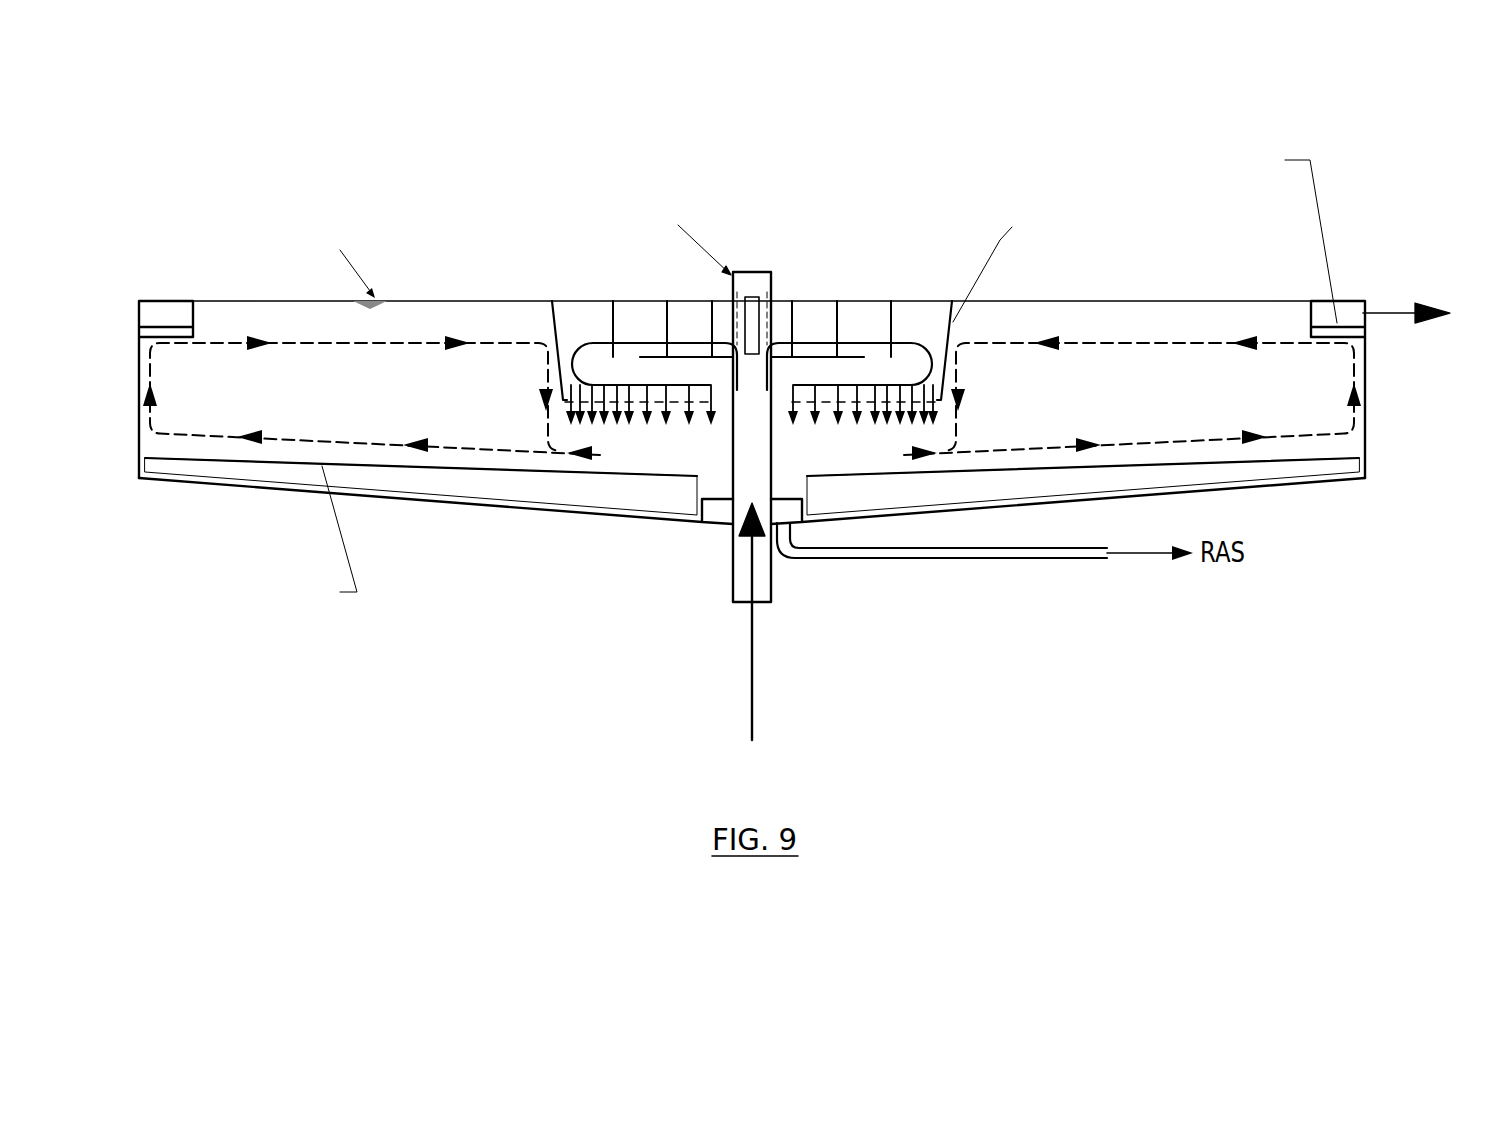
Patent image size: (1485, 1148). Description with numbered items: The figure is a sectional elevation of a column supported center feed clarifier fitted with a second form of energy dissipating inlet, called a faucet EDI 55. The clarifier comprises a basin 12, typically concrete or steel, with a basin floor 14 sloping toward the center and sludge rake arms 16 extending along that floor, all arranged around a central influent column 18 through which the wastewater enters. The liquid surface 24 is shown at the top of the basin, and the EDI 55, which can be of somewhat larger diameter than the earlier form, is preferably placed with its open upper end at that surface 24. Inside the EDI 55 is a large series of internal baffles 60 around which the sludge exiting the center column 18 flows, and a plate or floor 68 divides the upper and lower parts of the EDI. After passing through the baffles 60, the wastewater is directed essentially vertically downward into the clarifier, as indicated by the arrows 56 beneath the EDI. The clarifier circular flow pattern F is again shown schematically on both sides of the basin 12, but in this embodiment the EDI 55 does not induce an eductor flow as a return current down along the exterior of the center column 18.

The basin 12 is at (1365, 444).
The basin floor 14 is at (1265, 467).
The sludge rake arms 16 is at (380, 466).
The central influent column 18 is at (771, 468).
The liquid surface 24 is at (428, 298).
The EDI 55 is at (892, 284).
The arrows 56 is at (688, 410).
The internal baffles 60 is at (712, 318).
The plate or floor 68 is at (808, 357).
The clarifier circular flow pattern F is at (320, 342).